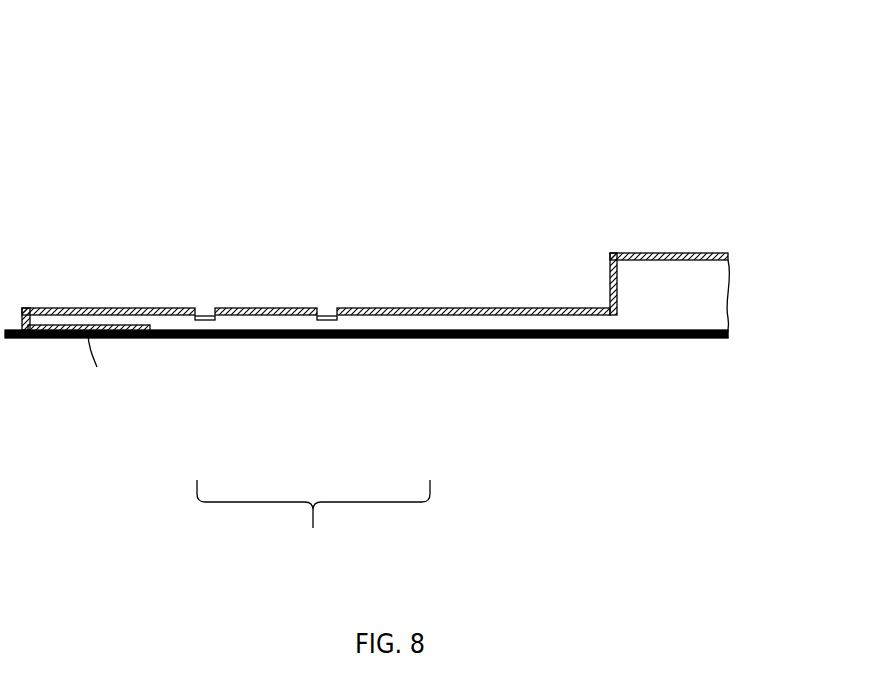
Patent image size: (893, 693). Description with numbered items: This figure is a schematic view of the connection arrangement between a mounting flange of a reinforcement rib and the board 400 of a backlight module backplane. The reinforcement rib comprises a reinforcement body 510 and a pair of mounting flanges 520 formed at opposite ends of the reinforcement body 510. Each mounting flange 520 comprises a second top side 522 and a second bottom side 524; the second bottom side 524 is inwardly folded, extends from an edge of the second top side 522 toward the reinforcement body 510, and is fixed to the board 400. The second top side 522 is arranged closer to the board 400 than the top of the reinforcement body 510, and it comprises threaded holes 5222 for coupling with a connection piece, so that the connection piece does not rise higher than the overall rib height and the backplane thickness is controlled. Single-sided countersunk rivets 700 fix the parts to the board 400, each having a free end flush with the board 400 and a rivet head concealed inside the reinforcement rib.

The board 400 is at (35, 333).
The reinforcement body 510 is at (702, 253).
The mounting flange 520 is at (313, 534).
The second top side 522 is at (347, 317).
The threaded hole 5222 is at (212, 312).
The second bottom side 524 is at (130, 333).
The single-sided countersunk rivet 700 is at (108, 373).